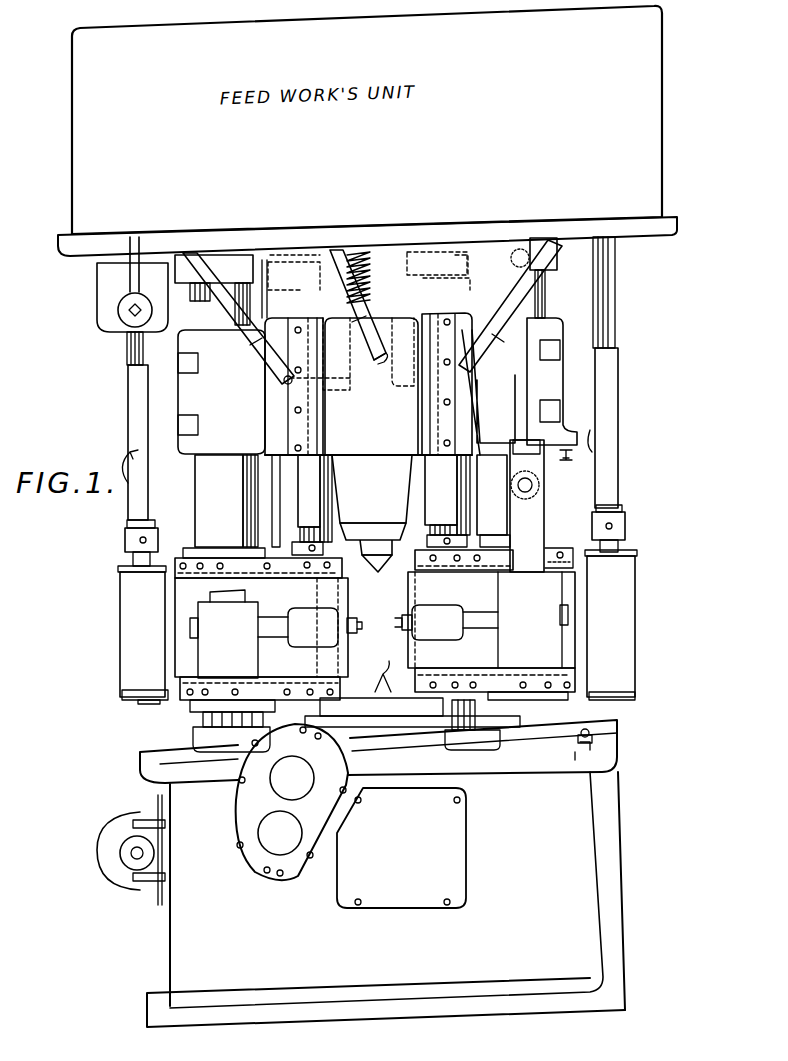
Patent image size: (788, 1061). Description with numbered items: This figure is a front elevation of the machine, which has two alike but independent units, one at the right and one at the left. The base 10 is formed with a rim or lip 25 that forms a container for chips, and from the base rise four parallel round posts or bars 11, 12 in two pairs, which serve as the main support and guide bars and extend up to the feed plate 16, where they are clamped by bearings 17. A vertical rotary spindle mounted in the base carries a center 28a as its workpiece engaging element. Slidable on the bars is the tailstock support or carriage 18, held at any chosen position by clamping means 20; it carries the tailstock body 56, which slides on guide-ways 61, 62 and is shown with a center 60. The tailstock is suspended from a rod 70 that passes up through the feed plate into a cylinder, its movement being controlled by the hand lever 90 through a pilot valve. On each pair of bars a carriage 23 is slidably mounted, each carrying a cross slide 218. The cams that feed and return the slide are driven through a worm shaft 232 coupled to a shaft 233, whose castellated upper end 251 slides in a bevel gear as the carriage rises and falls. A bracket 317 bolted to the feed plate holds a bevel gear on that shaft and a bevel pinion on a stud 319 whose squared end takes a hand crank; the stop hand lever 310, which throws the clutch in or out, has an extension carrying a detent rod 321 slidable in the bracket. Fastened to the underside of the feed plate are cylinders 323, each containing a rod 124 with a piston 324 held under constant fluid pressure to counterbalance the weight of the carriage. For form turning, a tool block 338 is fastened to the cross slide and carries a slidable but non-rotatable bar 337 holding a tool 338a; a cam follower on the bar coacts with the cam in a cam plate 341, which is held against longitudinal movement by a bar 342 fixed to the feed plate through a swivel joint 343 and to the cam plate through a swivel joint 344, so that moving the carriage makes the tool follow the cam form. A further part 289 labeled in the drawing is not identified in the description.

The base 10 is at (361, 875).
The post or bar 11 is at (558, 496).
The post or bar 12 is at (428, 483).
The feed plate 16 is at (676, 226).
The bearing 17 is at (190, 255).
The tailstock support or carriage 18 is at (563, 387).
The clamping means 20 is at (190, 440).
The carriage 23 is at (175, 572).
The rim or lip 25 is at (378, 751).
The center 28a is at (392, 670).
The tailstock body 56 is at (375, 465).
The center 60 is at (377, 566).
The guide-way 61 is at (445, 404).
The guide-way 62 is at (302, 410).
The rod 70 is at (375, 275).
The hand lever 90 is at (372, 365).
The rod 124 is at (250, 245).
The cross slide 218 is at (292, 580).
The worm shaft 232 is at (128, 546).
The shaft 233 is at (129, 403).
The castellated upper end 251 is at (131, 350).
The hidden link 289 is at (500, 300).
The stop hand lever 310 is at (252, 343).
The bracket 317 is at (100, 308).
The stud 319 is at (130, 313).
The detent rod 321 is at (128, 270).
The cylinder 323 is at (332, 255).
The piston 324 is at (300, 252).
The bar 337 is at (282, 628).
The tool block 338 is at (310, 643).
The tool 338a is at (395, 622).
The cam plate 341 is at (232, 605).
The bar 342 is at (515, 383).
The swivel joint 343 is at (545, 290).
The swivel joint 344 is at (545, 482).